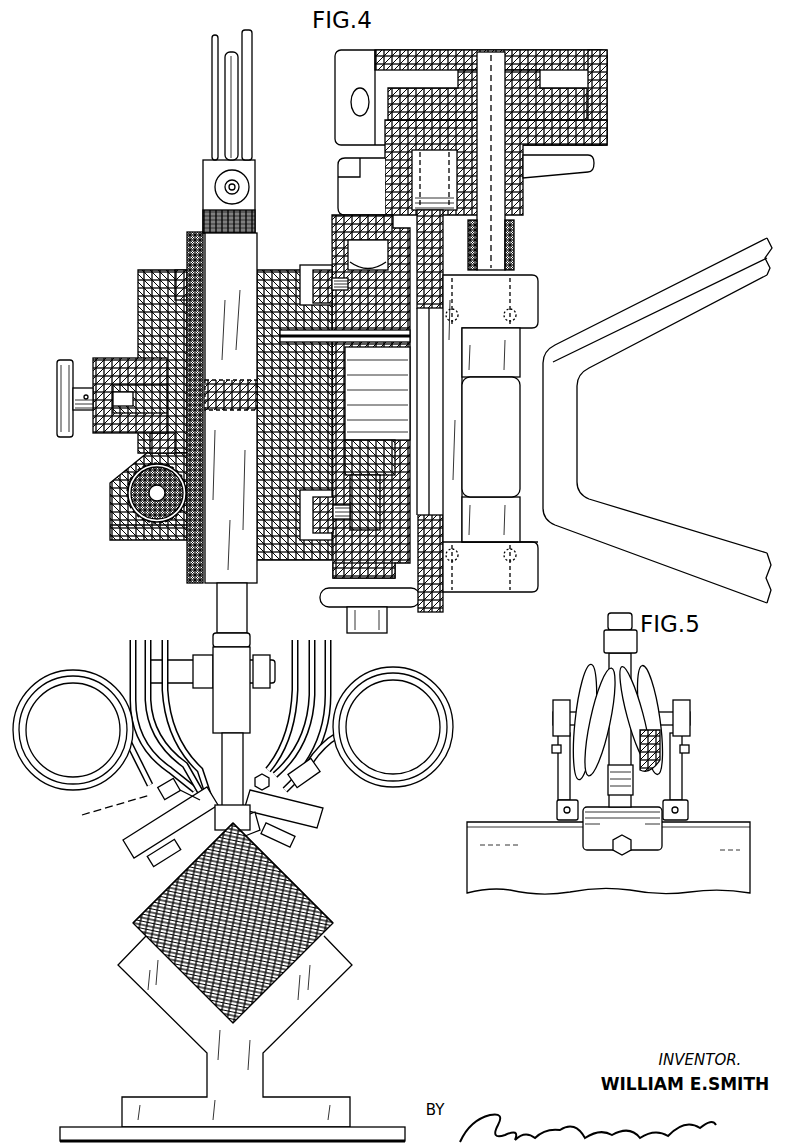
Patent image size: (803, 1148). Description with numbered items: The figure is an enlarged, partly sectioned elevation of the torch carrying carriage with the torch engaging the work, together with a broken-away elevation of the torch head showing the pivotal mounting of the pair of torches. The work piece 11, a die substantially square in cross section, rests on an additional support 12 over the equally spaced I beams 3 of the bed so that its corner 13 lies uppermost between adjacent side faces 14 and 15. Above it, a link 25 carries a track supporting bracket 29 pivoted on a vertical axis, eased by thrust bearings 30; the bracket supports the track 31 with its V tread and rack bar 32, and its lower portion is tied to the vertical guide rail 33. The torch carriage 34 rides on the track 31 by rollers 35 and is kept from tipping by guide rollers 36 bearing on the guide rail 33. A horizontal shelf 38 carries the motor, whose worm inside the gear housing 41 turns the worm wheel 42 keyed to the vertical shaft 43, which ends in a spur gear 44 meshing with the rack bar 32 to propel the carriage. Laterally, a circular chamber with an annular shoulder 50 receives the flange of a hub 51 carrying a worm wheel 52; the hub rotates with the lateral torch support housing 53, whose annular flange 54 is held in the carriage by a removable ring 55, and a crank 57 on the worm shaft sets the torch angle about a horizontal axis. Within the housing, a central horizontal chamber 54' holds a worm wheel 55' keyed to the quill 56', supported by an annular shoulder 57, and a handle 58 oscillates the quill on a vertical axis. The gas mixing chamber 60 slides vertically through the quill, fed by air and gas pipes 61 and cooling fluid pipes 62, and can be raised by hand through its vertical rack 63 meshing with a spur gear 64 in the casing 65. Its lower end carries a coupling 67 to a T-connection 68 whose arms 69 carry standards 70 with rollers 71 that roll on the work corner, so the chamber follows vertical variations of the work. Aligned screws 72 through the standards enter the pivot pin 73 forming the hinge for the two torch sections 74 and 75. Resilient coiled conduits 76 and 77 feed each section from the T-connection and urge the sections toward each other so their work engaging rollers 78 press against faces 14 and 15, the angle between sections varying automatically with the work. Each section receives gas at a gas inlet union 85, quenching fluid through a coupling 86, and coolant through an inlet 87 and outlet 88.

In FIG. 4, the I beam 3 is at (368, 1126).
In FIG. 4, the work piece 11 is at (312, 925).
In FIG. 5, the work piece 11 is at (504, 822).
In FIG. 4, the additional support 12 is at (292, 1015).
In FIG. 4, the corner 13 is at (248, 843).
In FIG. 4, the side face 14 is at (295, 890).
In FIG. 4, the side face 15 is at (150, 893).
In FIG. 4, the link 25 is at (690, 265).
In FIG. 4, the track supporting bracket 29 is at (540, 280).
In FIG. 4, the thrust bearing 30 is at (532, 552).
In FIG. 4, the track 31 is at (432, 312).
In FIG. 4, the rack bar 32 is at (445, 262).
In FIG. 4, the guide rail 33 is at (445, 605).
In FIG. 4, the torch carriage 34 is at (345, 213).
In FIG. 4, the roller 35 is at (412, 198).
In FIG. 4, the guide roller 36 is at (410, 607).
In FIG. 4, the horizontal shelf 38 is at (596, 163).
In FIG. 4, the gear housing 41 is at (598, 73).
In FIG. 4, the worm wheel 42 is at (575, 106).
In FIG. 4, the vertical shaft 43 is at (505, 223).
In FIG. 4, the spur gear 44 is at (515, 247).
In FIG. 4, the annular shoulder 50 is at (333, 242).
In FIG. 4, the hub 51 is at (350, 455).
In FIG. 4, the worm wheel 52 is at (375, 470).
In FIG. 4, the lateral torch support housing 53 is at (145, 310).
In FIG. 4, the annular flange 54 is at (347, 559).
In FIG. 4, the central horizontal chamber 54' is at (113, 414).
In FIG. 4, the removable ring 55 is at (318, 525).
In FIG. 4, the worm wheel 55' is at (125, 369).
In FIG. 4, the quill 56' is at (158, 263).
In FIG. 4, the annular shoulder 57 is at (152, 438).
In FIG. 4, the handle 58 is at (57, 396).
In FIG. 4, the gas mixing chamber 60 is at (205, 182).
In FIG. 4, the air and gas pipe 61 is at (228, 125).
In FIG. 4, the cooling fluid pipe 62 is at (212, 66).
In FIG. 4, the vertical rack 63 is at (192, 560).
In FIG. 4, the spur gear 64 is at (145, 535).
In FIG. 4, the casing 65 is at (115, 500).
In FIG. 4, the coupling 67 is at (213, 638).
In FIG. 5, the coupling 67 is at (604, 637).
In FIG. 4, the T-connection 68 is at (222, 690).
In FIG. 5, the T-connection 68 is at (632, 692).
In FIG. 4, the arm 69 is at (275, 660).
In FIG. 5, the arm 69 is at (690, 718).
In FIG. 5, the standard 70 is at (558, 774).
In FIG. 4, the roller 71 is at (250, 815).
In FIG. 5, the roller 71 is at (562, 822).
In FIG. 5, the screw 72 is at (552, 749).
In FIG. 5, the pivot pin 73 is at (662, 768).
In FIG. 4, the torch section 74 is at (160, 792).
In FIG. 4, the torch section 75 is at (244, 830).
In FIG. 4, the resilient coiled conduit 76 is at (42, 782).
In FIG. 5, the resilient coiled conduit 76 is at (655, 670).
In FIG. 4, the coil 77 is at (440, 727).
In FIG. 5, the coil 77 is at (580, 681).
In FIG. 4, the work engaging roller 78 is at (148, 850).
In FIG. 4, the gas inlet union 85 is at (318, 770).
In FIG. 5, the gas inlet union 85 is at (620, 796).
In FIG. 4, the coupling 86 is at (103, 811).
In FIG. 4, the coolant inlet 87 is at (188, 797).
In FIG. 4, the coolant outlet 88 is at (272, 783).